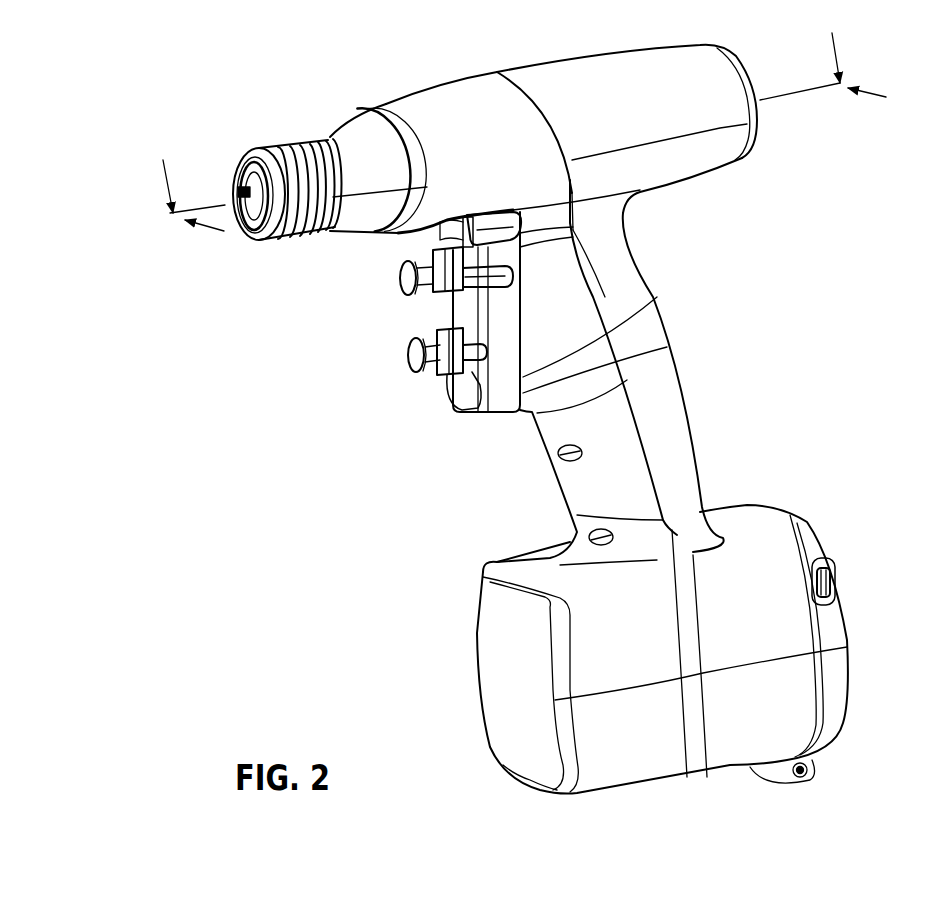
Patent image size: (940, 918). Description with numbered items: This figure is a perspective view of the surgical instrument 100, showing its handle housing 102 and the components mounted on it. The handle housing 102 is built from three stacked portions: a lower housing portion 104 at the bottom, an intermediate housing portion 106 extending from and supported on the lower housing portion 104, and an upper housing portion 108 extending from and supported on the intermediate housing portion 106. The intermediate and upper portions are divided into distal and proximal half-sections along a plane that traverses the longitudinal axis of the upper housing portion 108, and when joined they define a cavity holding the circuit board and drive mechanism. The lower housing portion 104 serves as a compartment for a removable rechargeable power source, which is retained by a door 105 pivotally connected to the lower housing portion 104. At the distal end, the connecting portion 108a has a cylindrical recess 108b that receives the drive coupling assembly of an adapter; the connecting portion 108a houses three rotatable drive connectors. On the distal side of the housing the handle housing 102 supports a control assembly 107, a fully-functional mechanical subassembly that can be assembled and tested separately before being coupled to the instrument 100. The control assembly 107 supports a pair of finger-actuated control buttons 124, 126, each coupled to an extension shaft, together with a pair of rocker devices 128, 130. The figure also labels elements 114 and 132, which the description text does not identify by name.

The surgical instrument 100 is at (290, 80).
The handle housing 102 is at (755, 57).
The lower housing portion 104 is at (483, 643).
The door 105 is at (808, 520).
The intermediate housing portion 106 is at (683, 355).
The control assembly 107 is at (483, 420).
The upper housing portion 108 is at (766, 138).
The connecting portion 108a is at (246, 152).
The cylindrical recess 108b is at (247, 201).
The collar 114 is at (332, 134).
The control button 124 is at (398, 280).
The control button 126 is at (405, 365).
The rocker device 128 is at (446, 298).
The rocker device 130 is at (452, 392).
The latch 132 is at (455, 233).